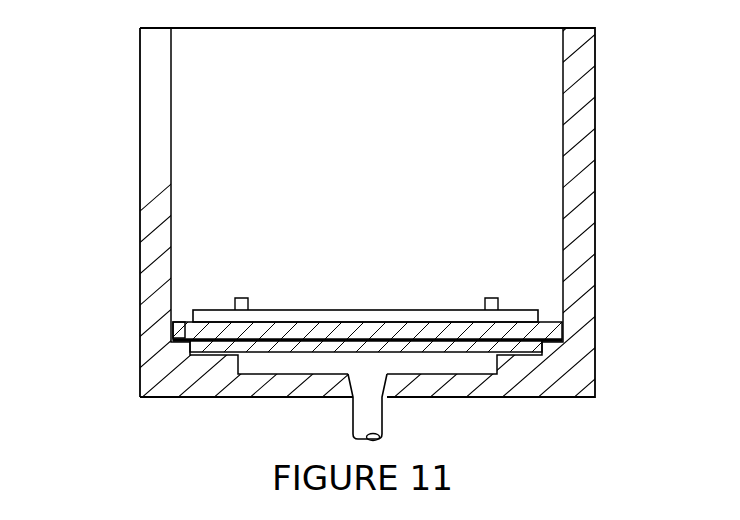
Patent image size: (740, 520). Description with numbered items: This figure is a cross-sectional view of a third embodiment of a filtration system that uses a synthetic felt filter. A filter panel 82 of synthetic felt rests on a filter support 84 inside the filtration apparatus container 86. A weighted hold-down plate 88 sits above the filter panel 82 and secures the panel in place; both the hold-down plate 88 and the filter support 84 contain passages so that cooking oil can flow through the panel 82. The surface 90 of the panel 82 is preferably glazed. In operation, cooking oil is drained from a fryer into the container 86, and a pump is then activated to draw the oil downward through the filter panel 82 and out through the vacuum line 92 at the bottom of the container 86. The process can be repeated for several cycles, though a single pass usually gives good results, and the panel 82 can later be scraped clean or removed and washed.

The filter panel 82 is at (182, 332).
The filter support 84 is at (470, 352).
The filtration apparatus container 86 is at (140, 79).
The weighted hold-down plate 88 is at (312, 310).
The surface 90 is at (181, 312).
The vacuum line 92 is at (352, 418).